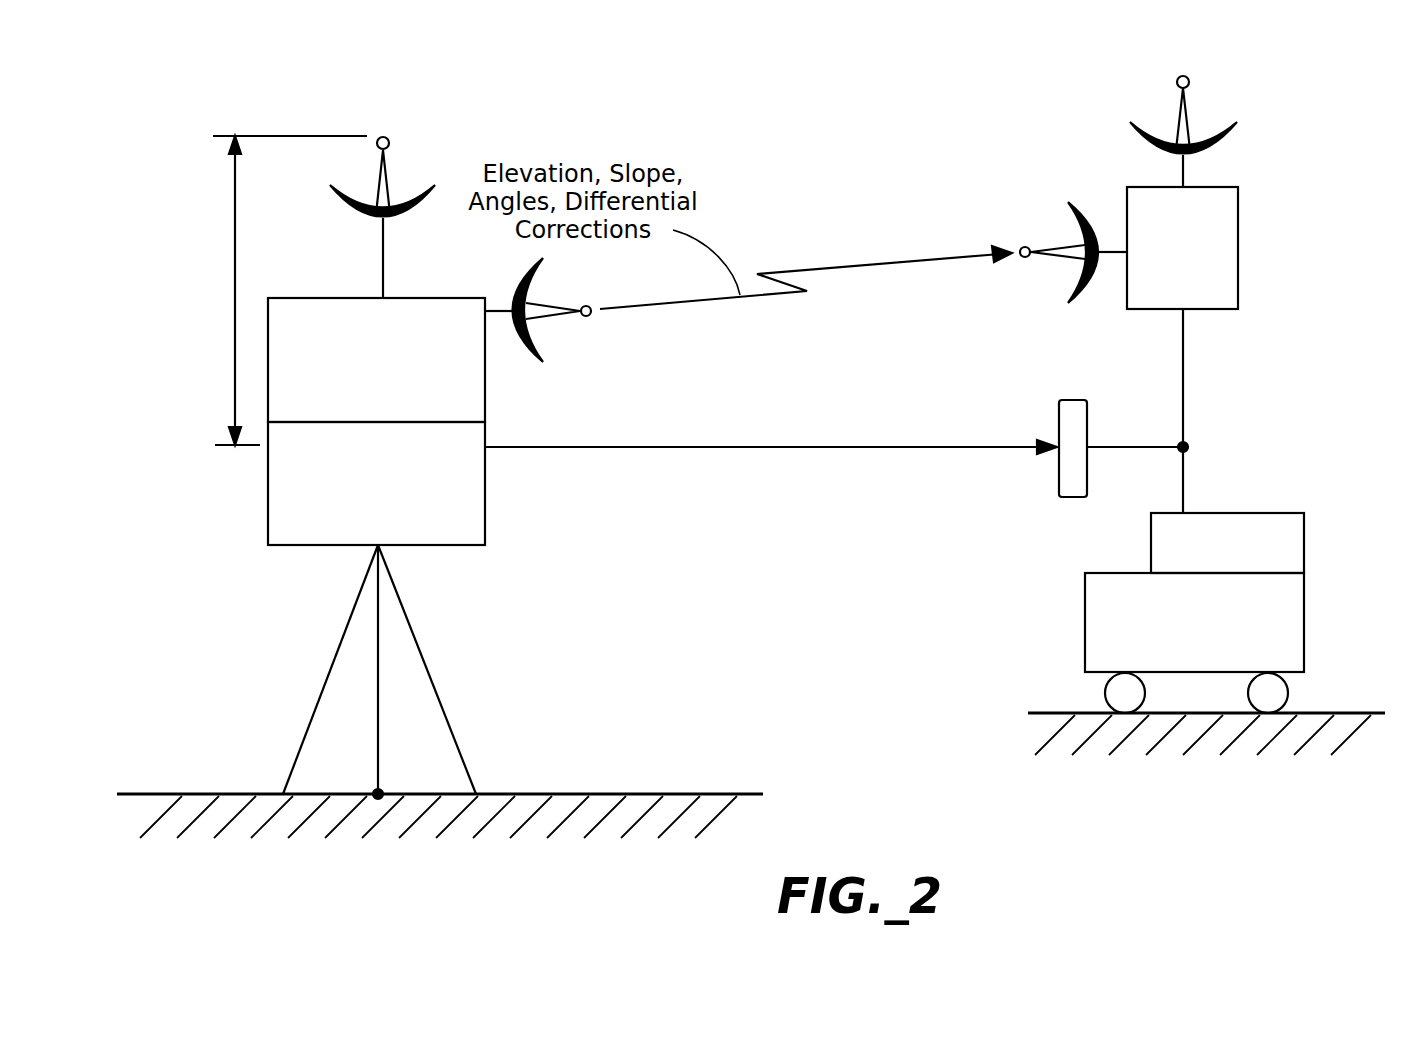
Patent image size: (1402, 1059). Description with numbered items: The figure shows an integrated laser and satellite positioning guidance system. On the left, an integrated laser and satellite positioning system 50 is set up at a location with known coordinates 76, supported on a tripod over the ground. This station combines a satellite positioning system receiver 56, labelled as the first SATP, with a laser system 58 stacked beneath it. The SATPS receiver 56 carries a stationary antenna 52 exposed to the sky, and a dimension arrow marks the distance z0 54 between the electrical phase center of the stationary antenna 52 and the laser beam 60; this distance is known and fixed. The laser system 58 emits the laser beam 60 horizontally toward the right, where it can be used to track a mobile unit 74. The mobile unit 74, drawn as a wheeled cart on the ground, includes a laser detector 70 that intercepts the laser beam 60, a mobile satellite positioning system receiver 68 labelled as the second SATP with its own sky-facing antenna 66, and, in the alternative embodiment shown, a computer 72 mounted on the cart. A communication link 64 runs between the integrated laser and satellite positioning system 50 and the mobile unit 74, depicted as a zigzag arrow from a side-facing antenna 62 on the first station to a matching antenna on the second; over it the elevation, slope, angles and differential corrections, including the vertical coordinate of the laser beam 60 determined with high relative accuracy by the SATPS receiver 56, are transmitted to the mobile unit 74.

The integrated laser and satellite positioning system 50 is at (238, 658).
The stationary antenna 52 is at (344, 202).
The distance z0 54 is at (234, 327).
The satellite positioning system receiver 56 is at (343, 296).
The laser system 58 is at (410, 547).
The laser beam 60 is at (755, 447).
The first communication antenna 62 is at (523, 347).
The communication link 64 is at (958, 253).
The second satellite antenna 66 is at (1215, 145).
The mobile satellite positioning system receiver 68 is at (1240, 258).
The laser detector 70 is at (1057, 427).
The computer 72 is at (1305, 555).
The mobile unit 74 is at (1305, 610).
The location with known coordinates 76 is at (380, 790).